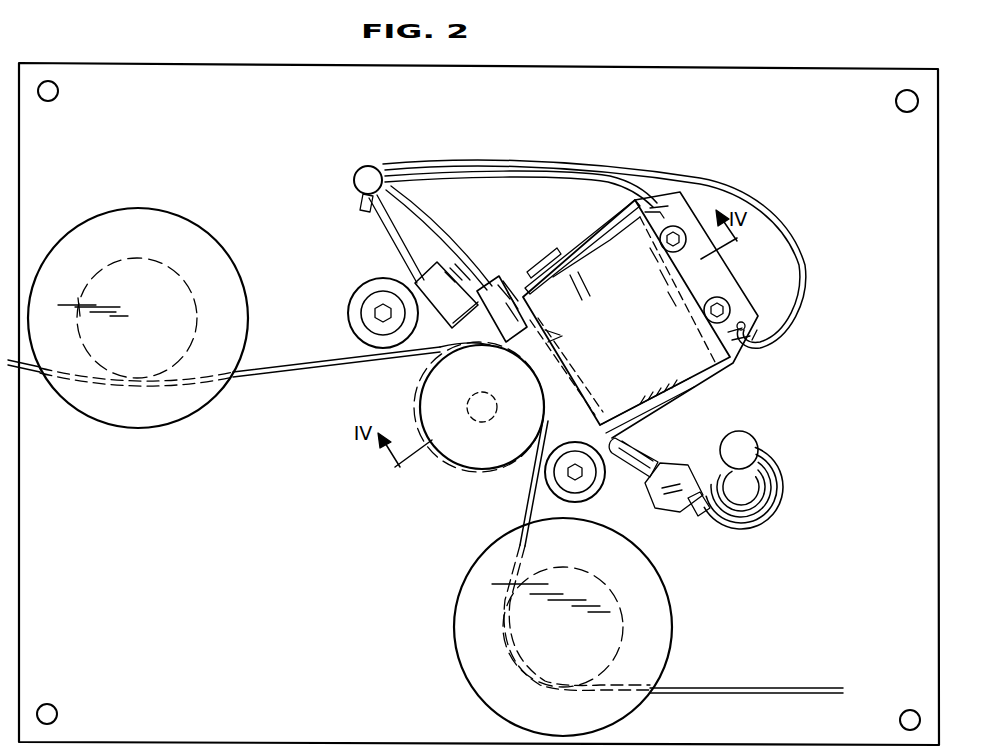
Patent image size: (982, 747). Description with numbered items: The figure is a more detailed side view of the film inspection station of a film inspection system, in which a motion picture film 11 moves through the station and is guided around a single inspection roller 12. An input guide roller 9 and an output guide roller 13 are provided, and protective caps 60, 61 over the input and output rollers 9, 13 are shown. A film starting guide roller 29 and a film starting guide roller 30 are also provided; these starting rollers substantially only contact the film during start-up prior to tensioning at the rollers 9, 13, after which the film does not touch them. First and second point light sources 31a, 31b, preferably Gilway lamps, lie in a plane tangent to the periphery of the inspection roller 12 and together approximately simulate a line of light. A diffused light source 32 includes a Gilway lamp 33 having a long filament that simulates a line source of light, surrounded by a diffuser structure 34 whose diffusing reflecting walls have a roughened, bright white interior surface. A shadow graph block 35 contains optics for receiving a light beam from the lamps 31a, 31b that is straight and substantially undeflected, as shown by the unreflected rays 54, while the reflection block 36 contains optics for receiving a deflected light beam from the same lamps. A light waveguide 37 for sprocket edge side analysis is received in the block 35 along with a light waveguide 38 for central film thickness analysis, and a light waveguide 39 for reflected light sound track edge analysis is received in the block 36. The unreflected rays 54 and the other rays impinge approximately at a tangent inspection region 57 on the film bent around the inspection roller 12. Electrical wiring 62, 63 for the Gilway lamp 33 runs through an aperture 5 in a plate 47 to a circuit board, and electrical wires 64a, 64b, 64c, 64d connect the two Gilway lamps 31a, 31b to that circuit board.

The aperture 5 is at (370, 165).
The input guide roller 9 is at (166, 318).
The motion picture film 11 is at (291, 369).
The inspection roller 12 is at (507, 452).
The output guide roller 13 is at (562, 648).
The film starting guide roller 29 is at (358, 305).
The film starting guide roller 30 is at (600, 487).
The first point light source 31a is at (637, 447).
The second point light source 31b is at (660, 455).
The diffused light source 32 is at (681, 380).
The Gilway lamp 33 is at (660, 400).
The diffuser structure 34 is at (626, 357).
The shadow graph block 35 is at (434, 314).
The reflection block 36 is at (494, 273).
The light waveguide 37 is at (385, 232).
The light waveguide 38 is at (362, 211).
The light waveguide 39 is at (425, 220).
The plate 47 is at (865, 152).
The unreflected rays 54 is at (480, 335).
The tangent inspection region 57 is at (528, 352).
The protective cap 60 is at (668, 640).
The protective cap 61 is at (207, 256).
The electrical wiring 62 is at (688, 173).
The electrical wiring 63 is at (620, 192).
The electrical wire 64a is at (725, 520).
The electrical wire 64b is at (786, 487).
The electrical wire 64c is at (771, 471).
The electrical wire 64d is at (759, 474).